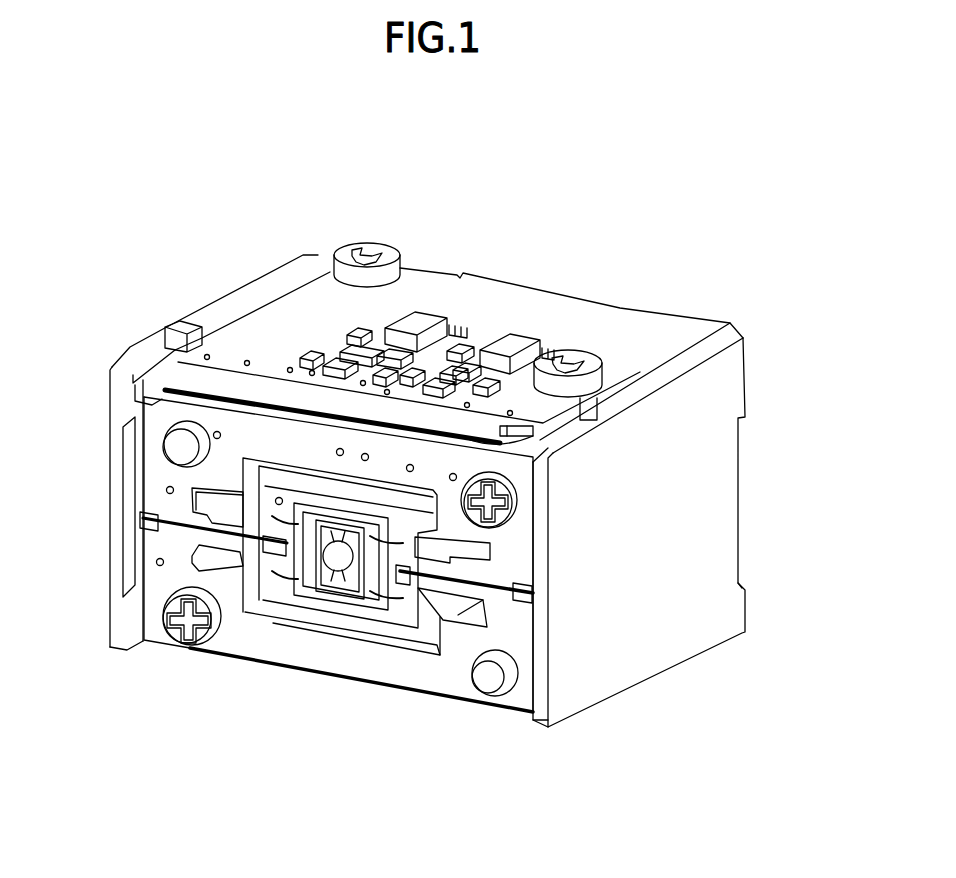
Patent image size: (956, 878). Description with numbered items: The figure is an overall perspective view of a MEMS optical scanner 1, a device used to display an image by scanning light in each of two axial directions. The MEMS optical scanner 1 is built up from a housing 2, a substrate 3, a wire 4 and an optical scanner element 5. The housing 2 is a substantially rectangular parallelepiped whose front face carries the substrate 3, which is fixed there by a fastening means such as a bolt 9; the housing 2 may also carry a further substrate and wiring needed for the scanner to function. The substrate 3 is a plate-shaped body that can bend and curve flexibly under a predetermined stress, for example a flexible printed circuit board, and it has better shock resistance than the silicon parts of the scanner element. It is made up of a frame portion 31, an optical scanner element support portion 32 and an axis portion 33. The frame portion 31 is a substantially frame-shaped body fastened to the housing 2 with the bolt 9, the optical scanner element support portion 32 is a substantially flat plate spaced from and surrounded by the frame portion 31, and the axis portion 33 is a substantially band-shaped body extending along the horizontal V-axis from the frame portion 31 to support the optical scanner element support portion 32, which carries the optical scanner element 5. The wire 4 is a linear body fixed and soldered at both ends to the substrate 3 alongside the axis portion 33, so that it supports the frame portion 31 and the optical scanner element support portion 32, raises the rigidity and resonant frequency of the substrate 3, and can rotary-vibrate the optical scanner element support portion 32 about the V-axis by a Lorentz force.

The MEMS optical scanner 1 is at (690, 284).
The housing 2 is at (731, 612).
The substrate 3 is at (268, 653).
The wire 4 is at (152, 513).
The optical scanner element 5 is at (313, 597).
The bolt 9 is at (520, 495).
The frame portion 31 is at (400, 677).
The optical scanner element support portion 32 is at (395, 605).
The axis portion 33 is at (230, 513).